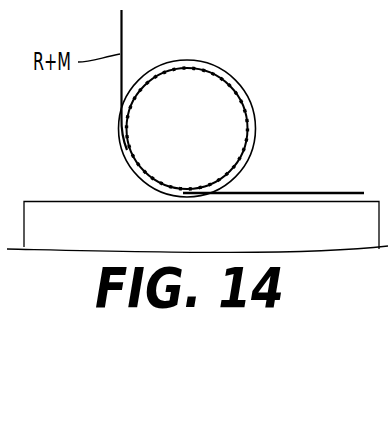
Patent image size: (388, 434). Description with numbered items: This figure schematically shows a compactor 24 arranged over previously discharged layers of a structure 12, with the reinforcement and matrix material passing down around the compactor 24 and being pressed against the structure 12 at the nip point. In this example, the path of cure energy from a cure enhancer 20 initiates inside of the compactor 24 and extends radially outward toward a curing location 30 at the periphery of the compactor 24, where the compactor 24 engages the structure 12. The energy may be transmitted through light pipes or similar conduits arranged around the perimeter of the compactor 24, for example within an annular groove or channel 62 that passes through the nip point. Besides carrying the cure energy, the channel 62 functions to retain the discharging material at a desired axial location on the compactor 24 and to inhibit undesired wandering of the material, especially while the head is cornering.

The structure 12 is at (102, 234).
The cure enhancer 20 is at (227, 101).
The compactor 24 is at (192, 138).
The curing location 30 is at (183, 198).
The annular groove or channel 62 is at (244, 162).